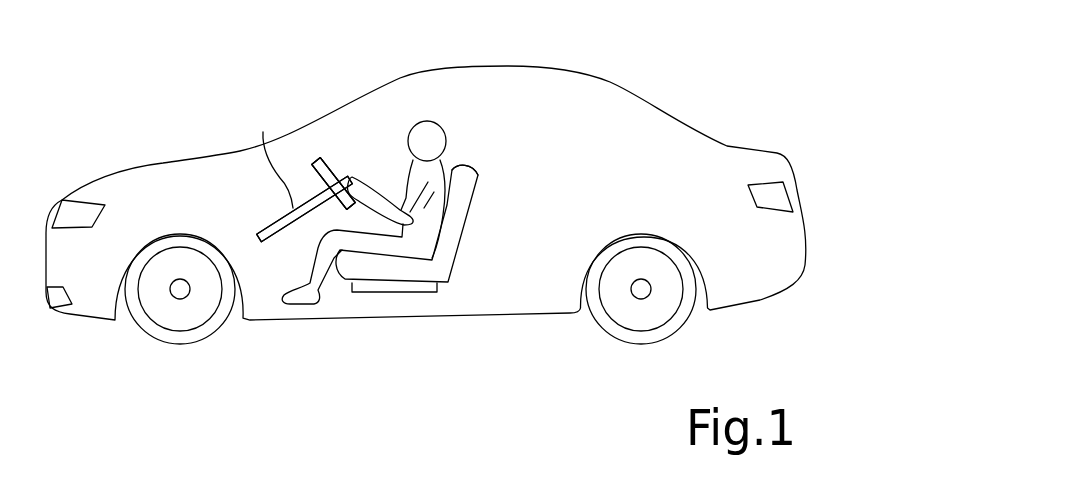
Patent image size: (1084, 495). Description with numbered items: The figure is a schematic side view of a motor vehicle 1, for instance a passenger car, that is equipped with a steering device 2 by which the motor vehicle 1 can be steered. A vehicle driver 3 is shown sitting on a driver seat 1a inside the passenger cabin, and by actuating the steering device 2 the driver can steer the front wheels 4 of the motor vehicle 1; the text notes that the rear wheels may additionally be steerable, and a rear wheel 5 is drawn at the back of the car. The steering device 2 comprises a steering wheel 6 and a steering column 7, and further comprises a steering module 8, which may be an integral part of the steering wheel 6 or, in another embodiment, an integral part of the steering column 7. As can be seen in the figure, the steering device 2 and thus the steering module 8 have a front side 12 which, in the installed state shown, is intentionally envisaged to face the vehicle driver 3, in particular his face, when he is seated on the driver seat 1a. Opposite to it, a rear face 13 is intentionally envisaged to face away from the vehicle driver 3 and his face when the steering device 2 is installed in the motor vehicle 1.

The motor vehicle 1 is at (659, 63).
The driver seat 1a is at (442, 254).
The steering device 2 is at (263, 196).
The vehicle driver 3 is at (474, 172).
The front wheels 4 is at (179, 317).
The rear wheel 5 is at (640, 318).
The steering wheel 6 is at (318, 143).
The steering column 7 is at (274, 155).
The steering module 8 is at (337, 187).
The front side 12 is at (359, 153).
The rear face 13 is at (260, 261).